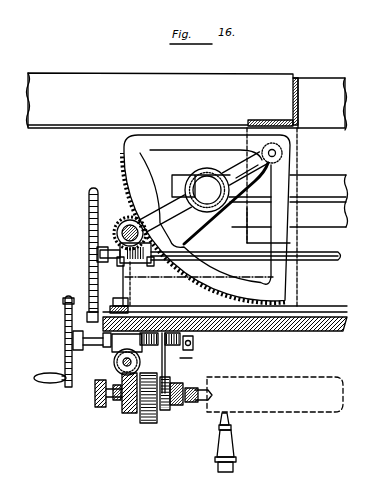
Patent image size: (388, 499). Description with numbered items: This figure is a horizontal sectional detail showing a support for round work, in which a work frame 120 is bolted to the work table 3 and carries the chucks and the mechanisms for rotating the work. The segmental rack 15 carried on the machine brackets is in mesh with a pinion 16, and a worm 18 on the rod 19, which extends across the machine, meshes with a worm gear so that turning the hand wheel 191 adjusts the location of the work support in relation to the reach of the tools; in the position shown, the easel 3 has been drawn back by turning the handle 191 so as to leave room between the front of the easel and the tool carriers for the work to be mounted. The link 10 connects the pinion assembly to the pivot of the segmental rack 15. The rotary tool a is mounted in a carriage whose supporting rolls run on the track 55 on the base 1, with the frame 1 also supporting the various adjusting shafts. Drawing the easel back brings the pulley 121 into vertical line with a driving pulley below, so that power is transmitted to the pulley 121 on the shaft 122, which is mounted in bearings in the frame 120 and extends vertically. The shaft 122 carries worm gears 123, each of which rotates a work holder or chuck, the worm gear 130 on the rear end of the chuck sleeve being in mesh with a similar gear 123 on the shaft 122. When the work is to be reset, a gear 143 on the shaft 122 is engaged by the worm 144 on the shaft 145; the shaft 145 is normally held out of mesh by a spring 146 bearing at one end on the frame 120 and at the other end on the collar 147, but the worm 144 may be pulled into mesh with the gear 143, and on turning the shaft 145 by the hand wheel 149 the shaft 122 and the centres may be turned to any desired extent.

The frame 1 is at (90, 127).
The segmental rack 15 is at (122, 160).
The pinion 16 is at (124, 226).
The link 10 is at (212, 202).
The track 55 is at (318, 177).
The rod 19 is at (224, 256).
The hand wheel 191 is at (90, 256).
The worm 18 is at (125, 266).
The work table 3 is at (344, 331).
The shaft 145 is at (93, 338).
The hand wheel 149 is at (64, 351).
The worm gear 123 is at (114, 358).
The pulley 121 is at (115, 368).
The shaft 122 is at (118, 373).
The gear 143 is at (103, 408).
The worm gear 130 is at (128, 424).
The worm 144 is at (148, 345).
The work frame 120 is at (167, 357).
The collar 147 is at (195, 343).
The spring 146 is at (192, 360).
The tool a is at (228, 413).